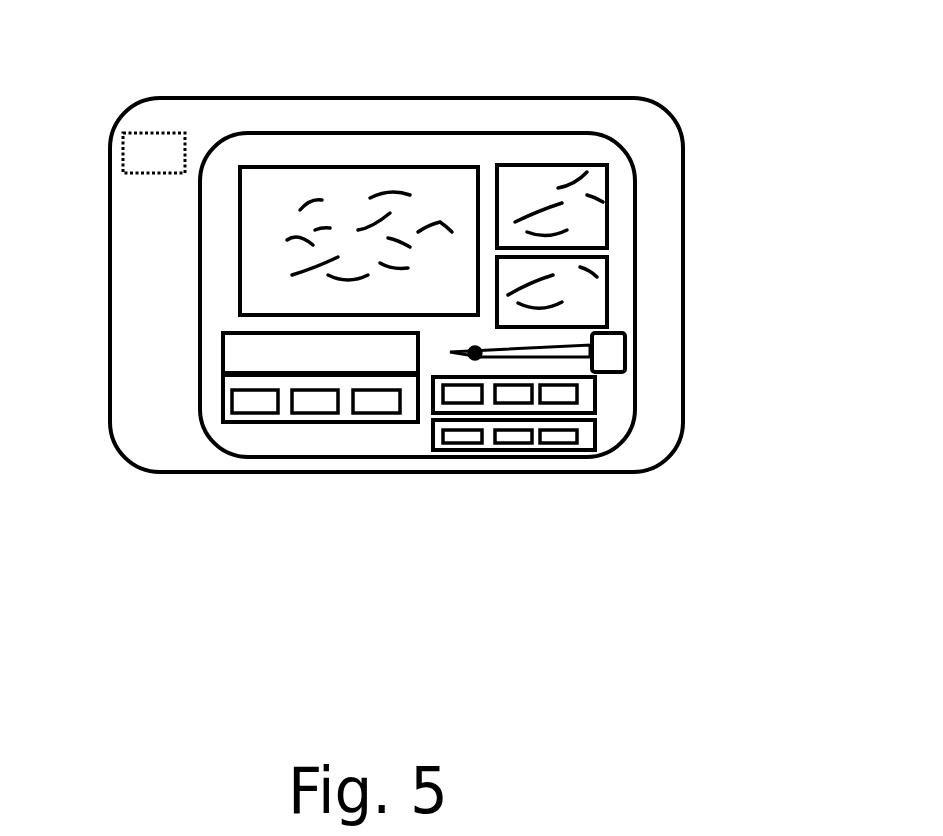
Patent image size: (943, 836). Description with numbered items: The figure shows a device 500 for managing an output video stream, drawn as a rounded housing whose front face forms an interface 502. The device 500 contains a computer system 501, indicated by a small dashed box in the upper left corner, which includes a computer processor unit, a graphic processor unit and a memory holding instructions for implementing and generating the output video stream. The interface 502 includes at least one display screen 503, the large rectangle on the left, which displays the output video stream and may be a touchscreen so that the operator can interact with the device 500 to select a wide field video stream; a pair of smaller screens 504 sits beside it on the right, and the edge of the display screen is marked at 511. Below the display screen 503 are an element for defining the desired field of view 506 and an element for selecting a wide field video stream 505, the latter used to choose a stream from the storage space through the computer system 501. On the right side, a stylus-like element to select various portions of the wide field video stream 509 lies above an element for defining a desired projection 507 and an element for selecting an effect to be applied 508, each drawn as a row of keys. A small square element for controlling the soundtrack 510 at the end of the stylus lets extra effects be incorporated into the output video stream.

The device 500 is at (412, 98).
The computer system 501 is at (158, 133).
The interface 502 is at (308, 458).
The display screen 503 is at (293, 153).
The secondary displays 504 is at (543, 185).
The element for selecting a wide field video stream 505 is at (237, 422).
The element for defining the desired field of view 506 is at (223, 360).
The element for defining a desired projection 507 is at (597, 400).
The element for selecting an effect to be applied 508 is at (490, 450).
The element to select various portions of the wide field video stream 509 is at (450, 352).
The element for controlling the soundtrack 510 is at (625, 340).
The display edge 511 is at (240, 277).